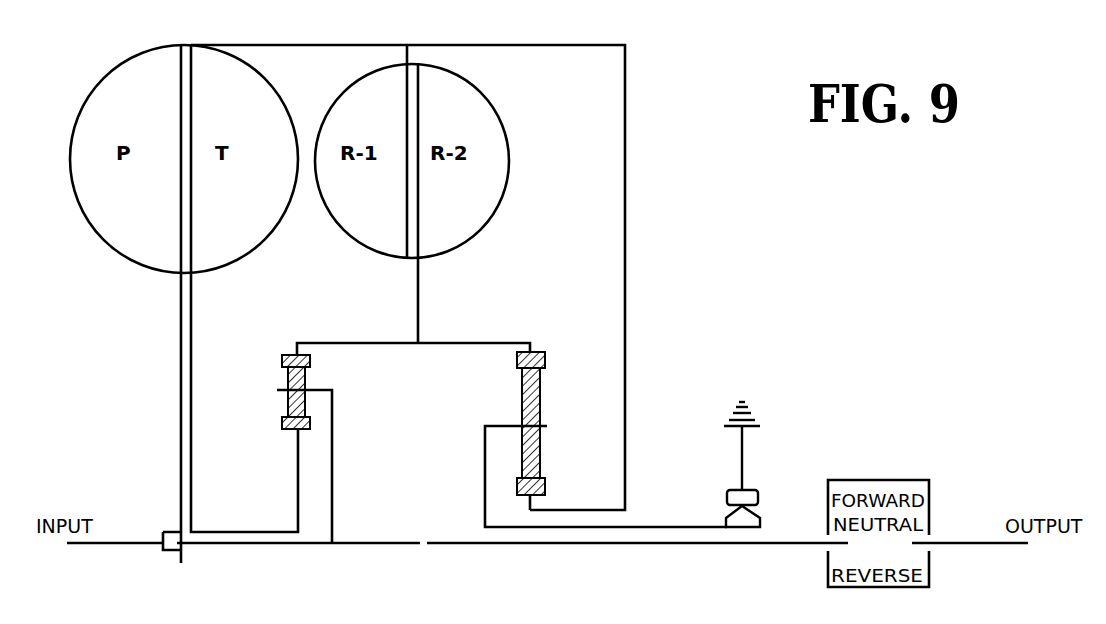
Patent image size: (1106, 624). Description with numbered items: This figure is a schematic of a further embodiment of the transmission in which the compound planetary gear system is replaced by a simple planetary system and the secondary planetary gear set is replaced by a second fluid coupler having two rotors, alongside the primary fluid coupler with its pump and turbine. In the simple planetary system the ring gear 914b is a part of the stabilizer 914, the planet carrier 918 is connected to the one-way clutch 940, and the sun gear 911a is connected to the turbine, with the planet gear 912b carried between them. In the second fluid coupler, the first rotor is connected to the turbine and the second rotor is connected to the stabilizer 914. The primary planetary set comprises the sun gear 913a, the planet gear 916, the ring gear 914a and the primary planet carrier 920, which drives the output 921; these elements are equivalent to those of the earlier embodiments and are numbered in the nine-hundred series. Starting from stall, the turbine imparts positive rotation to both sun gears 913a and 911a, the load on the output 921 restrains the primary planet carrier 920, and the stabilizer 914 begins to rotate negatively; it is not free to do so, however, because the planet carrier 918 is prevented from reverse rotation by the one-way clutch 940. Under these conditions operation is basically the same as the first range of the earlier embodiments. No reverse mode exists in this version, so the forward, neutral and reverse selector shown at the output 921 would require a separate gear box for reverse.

The stabilizer 914 is at (492, 313).
The ring gear 914a is at (288, 355).
The ring gear 914b is at (537, 352).
The planet gear 916 is at (288, 398).
The sun gear 913a is at (291, 430).
The primary planet carrier 920 is at (332, 456).
The planet carrier 918 is at (485, 479).
The planet gear 912b is at (541, 411).
The sun gear 911a is at (546, 496).
The one-way clutch 940 is at (758, 500).
The output 921 is at (403, 545).